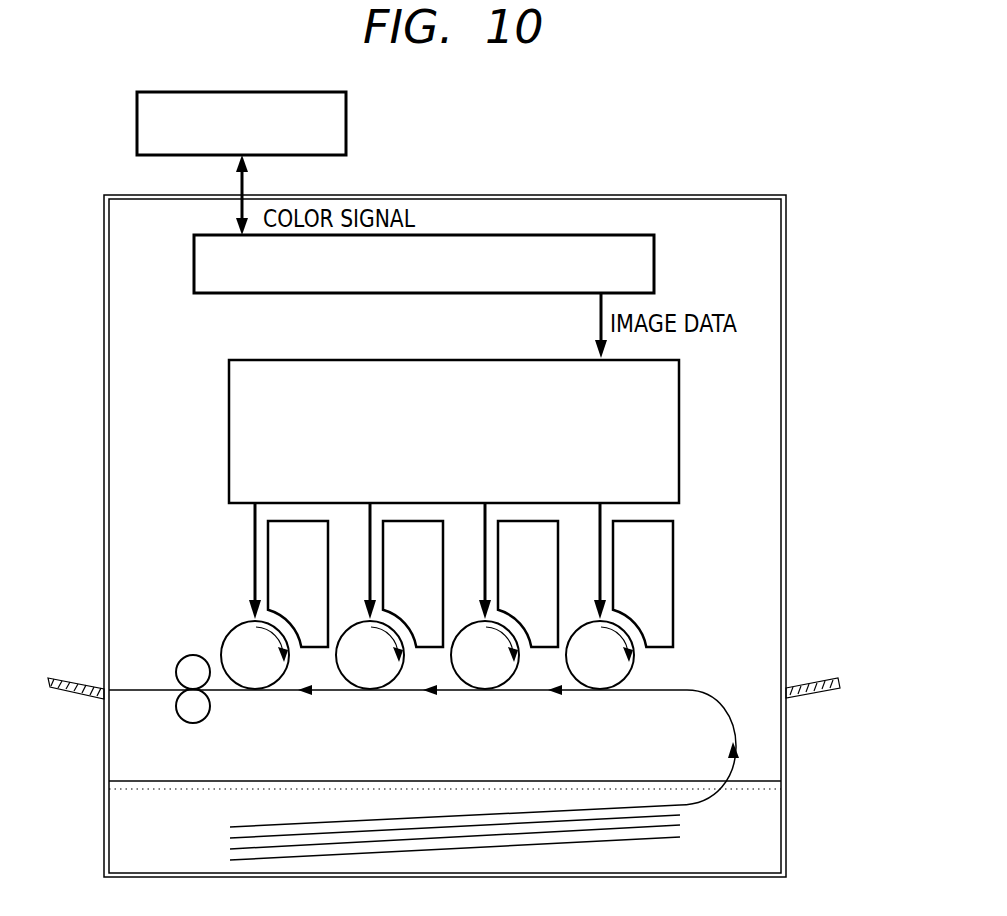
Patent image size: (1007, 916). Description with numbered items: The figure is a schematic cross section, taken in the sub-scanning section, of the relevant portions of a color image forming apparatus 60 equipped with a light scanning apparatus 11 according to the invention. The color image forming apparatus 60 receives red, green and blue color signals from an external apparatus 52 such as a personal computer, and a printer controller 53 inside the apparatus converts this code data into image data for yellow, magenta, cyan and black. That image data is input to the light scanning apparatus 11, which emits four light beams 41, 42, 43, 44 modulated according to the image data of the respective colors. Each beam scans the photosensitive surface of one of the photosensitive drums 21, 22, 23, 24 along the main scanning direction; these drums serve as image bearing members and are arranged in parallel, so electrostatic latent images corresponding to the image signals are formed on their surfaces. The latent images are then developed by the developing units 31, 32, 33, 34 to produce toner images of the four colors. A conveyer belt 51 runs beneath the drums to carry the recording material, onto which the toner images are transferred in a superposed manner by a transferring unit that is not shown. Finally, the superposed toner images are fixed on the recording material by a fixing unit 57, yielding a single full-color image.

The light scanning apparatus 11 is at (229, 388).
The photosensitive drum 21 is at (256, 675).
The photosensitive drum 22 is at (371, 675).
The photosensitive drum 23 is at (486, 675).
The photosensitive drum 24 is at (600, 675).
The developing unit 31 is at (301, 532).
The developing unit 32 is at (415, 532).
The developing unit 33 is at (530, 532).
The developing unit 34 is at (643, 532).
The light beam 41 is at (253, 557).
The light beam 42 is at (368, 575).
The light beam 43 is at (483, 577).
The light beam 44 is at (598, 577).
The conveyer belt 51 is at (722, 710).
The external apparatus 52 is at (347, 116).
The printer controller 53 is at (654, 250).
The fixing unit 57 is at (183, 720).
The color image forming apparatus 60 is at (648, 186).